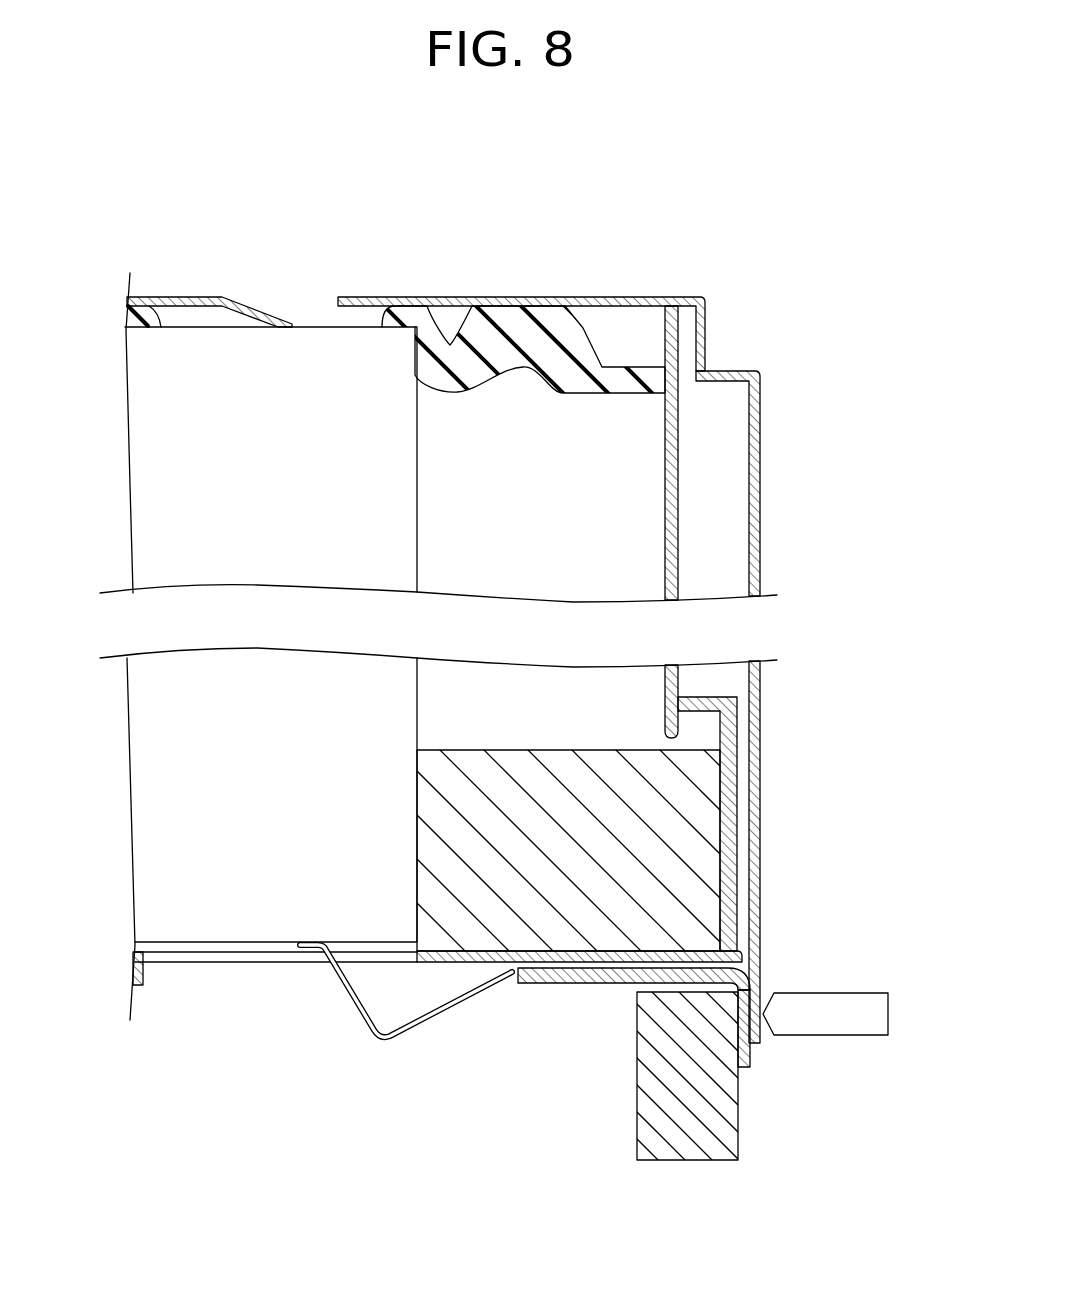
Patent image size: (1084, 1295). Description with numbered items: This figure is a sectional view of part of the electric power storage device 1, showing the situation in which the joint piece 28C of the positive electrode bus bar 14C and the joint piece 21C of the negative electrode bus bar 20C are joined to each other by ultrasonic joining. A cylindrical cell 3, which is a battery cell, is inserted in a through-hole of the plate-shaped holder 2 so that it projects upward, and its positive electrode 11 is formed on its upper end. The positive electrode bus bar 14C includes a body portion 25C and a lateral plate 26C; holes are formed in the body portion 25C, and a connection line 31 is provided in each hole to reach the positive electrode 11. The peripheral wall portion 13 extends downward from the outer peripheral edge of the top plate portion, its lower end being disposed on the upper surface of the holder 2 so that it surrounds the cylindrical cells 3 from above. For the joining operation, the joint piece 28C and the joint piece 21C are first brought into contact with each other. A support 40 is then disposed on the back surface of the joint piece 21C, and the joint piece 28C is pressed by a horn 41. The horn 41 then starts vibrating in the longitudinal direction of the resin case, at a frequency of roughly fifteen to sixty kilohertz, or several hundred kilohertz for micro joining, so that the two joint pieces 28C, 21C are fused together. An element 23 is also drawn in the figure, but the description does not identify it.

The electric power storage device 1 is at (764, 268).
The holder 2 is at (723, 798).
The cylindrical cell 3 is at (155, 485).
The positive electrode 11 is at (323, 325).
The peripheral wall portion 13 is at (680, 476).
The positive electrode bus bar 14C is at (437, 335).
The negative electrode bus bar 20C is at (528, 983).
The joint piece 21C is at (742, 1022).
The spring member 23 is at (378, 1045).
The body portion 25C is at (512, 298).
The lateral plate 26C is at (761, 553).
The joint piece 28C is at (763, 970).
The connection line 31 is at (272, 320).
The support 40 is at (675, 1088).
The horn 41 is at (832, 1025).